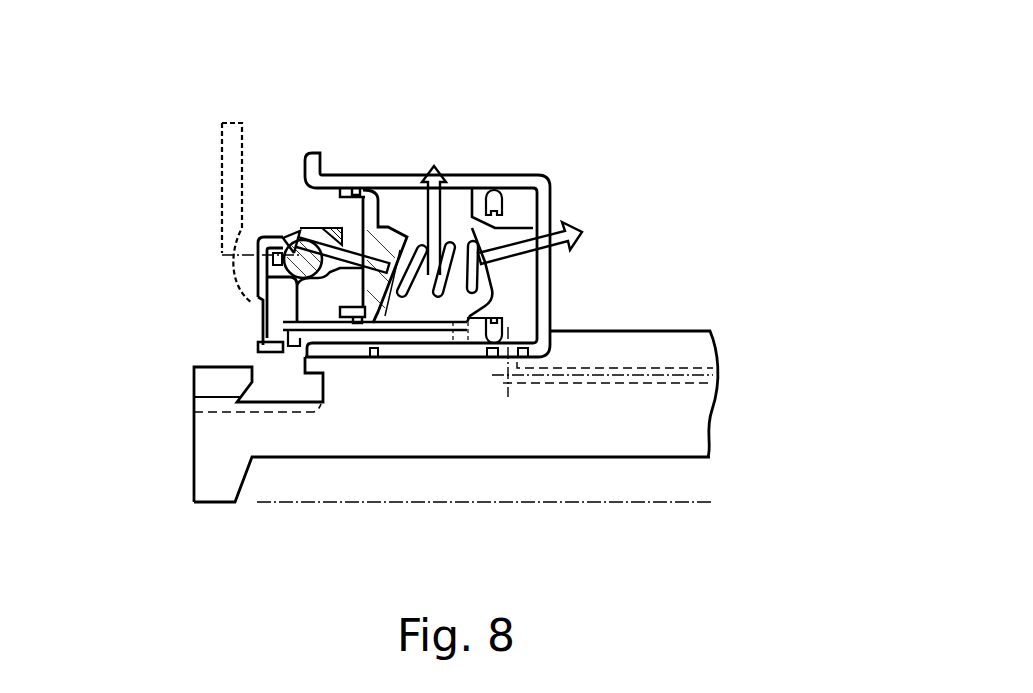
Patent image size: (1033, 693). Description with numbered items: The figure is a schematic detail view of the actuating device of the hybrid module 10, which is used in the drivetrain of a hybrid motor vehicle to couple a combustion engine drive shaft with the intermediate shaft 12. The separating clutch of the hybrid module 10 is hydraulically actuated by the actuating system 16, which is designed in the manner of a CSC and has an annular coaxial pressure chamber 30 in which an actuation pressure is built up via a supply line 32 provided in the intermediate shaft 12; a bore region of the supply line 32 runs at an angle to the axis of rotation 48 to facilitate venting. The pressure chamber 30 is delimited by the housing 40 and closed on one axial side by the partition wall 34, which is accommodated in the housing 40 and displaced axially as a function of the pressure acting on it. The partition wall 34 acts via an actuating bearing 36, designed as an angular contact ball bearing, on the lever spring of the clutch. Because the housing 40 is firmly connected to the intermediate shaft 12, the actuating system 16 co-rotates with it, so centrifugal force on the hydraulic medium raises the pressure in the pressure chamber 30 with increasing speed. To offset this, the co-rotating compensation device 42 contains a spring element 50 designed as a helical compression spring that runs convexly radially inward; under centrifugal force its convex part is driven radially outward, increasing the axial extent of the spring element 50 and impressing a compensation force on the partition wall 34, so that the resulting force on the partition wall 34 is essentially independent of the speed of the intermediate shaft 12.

The hybrid module 10 is at (152, 82).
The intermediate shaft 12 is at (282, 438).
The actuating system 16 is at (458, 170).
The pressure chamber 30 is at (513, 278).
The supply line 32 is at (642, 375).
The partition wall 34 is at (497, 226).
The actuating bearing 36 is at (272, 258).
The housing 40 is at (542, 208).
The compensation device 42 is at (402, 297).
The axis of rotation 48 is at (541, 502).
The spring element 50 is at (440, 293).